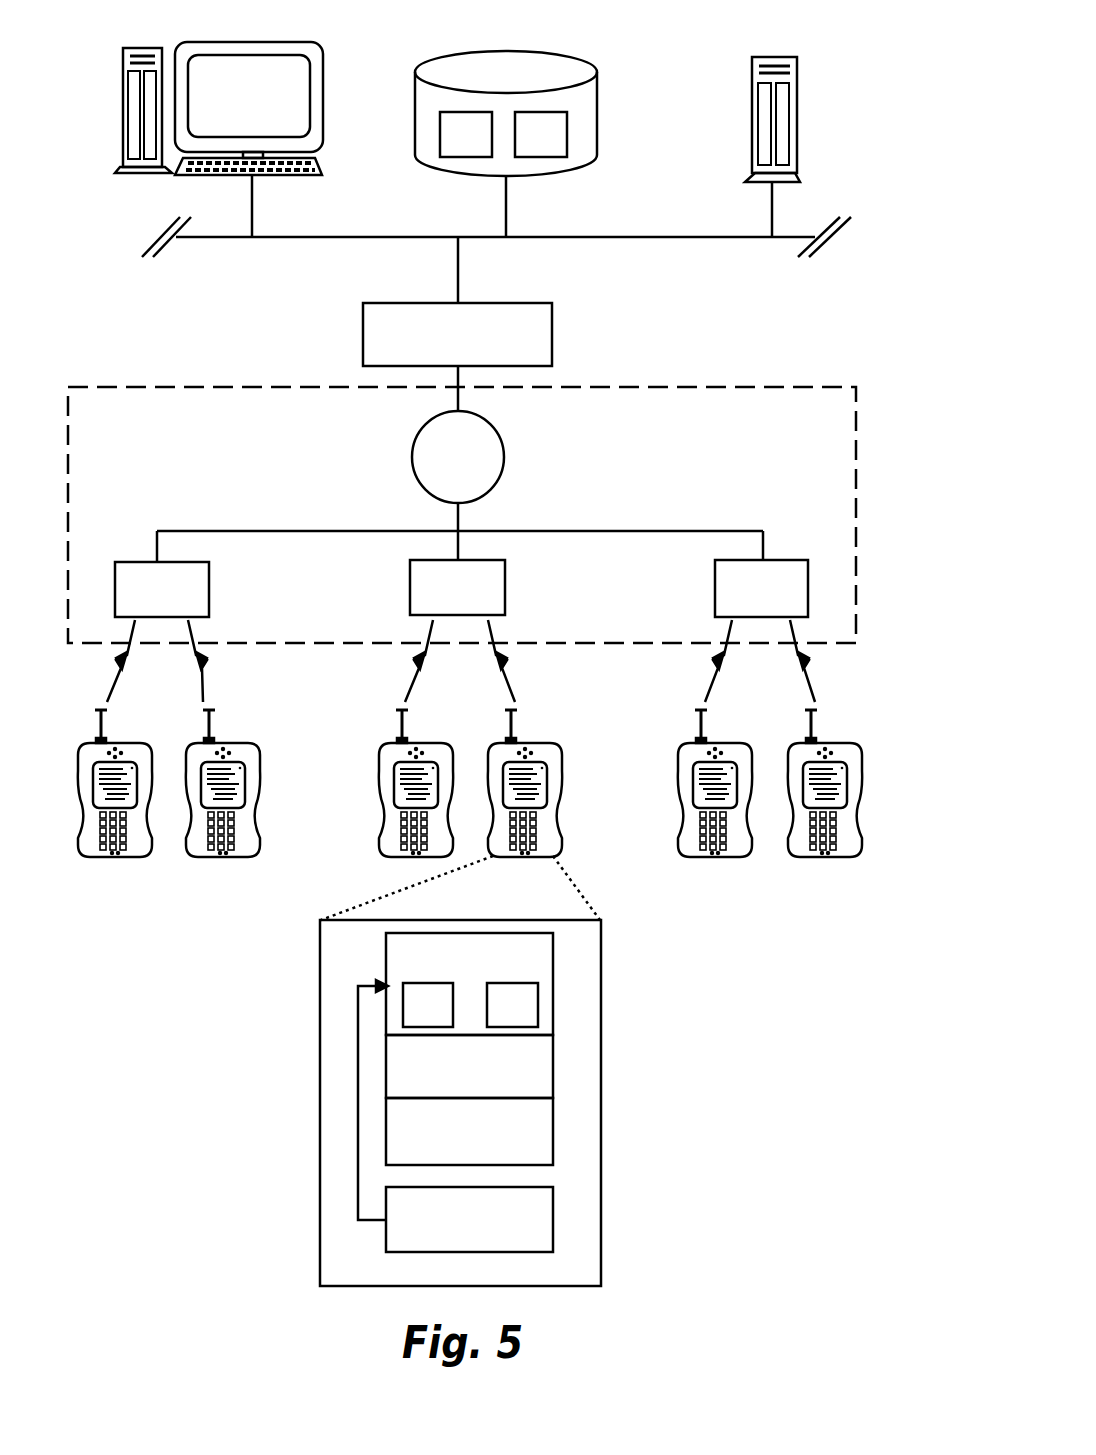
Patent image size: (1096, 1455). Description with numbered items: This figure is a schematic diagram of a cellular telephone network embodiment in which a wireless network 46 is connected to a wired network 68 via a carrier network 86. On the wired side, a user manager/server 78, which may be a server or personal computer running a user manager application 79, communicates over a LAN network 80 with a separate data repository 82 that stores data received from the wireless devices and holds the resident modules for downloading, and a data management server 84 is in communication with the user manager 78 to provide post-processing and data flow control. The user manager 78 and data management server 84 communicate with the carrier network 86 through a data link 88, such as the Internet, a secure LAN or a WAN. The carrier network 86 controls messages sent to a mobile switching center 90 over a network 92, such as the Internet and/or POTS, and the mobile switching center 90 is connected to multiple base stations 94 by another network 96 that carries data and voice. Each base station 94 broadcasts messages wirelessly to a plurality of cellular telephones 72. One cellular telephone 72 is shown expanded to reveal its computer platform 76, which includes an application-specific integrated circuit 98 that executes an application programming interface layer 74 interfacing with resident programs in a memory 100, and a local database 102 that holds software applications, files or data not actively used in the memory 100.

The wired network 68 is at (642, 62).
The user manager/server 78 is at (323, 107).
The user manager application 79 is at (123, 108).
The LAN network 80 is at (307, 237).
The data repository 82 is at (534, 144).
The data management server 84 is at (752, 105).
The carrier network 86 is at (457, 334).
The data link 88 is at (462, 250).
The wireless network 46 is at (660, 387).
The mobile switching center 90 is at (492, 422).
The network 92 is at (450, 377).
The network 96 is at (460, 518).
The base station 94 is at (209, 588).
The cellular telephone 72 is at (120, 741).
The computer platform 76 is at (459, 1103).
The memory 100 is at (521, 984).
The application programming interface 74 is at (553, 1055).
The application-specific integrated circuit 98 is at (553, 1123).
The local database 102 is at (553, 1203).